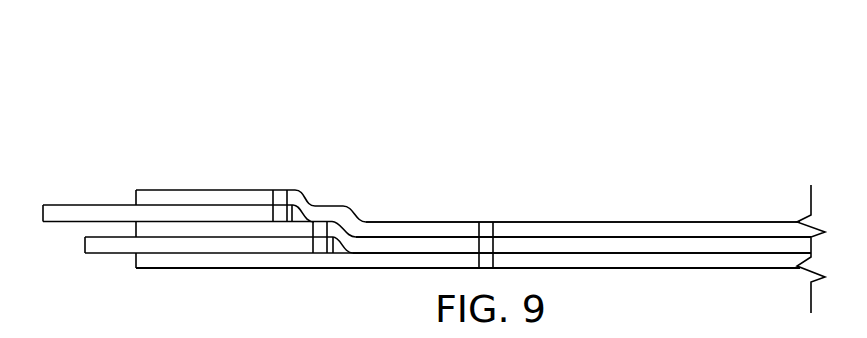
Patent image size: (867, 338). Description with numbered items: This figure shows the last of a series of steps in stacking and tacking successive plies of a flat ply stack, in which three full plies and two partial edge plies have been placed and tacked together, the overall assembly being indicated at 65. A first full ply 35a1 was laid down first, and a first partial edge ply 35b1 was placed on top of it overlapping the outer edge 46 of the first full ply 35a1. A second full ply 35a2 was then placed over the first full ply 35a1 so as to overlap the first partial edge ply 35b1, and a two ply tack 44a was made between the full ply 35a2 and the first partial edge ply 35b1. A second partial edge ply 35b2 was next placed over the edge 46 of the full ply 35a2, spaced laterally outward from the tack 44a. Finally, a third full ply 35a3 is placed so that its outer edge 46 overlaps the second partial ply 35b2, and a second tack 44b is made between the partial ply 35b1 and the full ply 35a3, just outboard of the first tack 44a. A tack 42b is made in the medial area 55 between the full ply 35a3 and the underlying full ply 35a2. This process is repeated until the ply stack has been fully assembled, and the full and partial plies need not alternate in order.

The connector assembly 65 is at (184, 119).
The outer edge 46 is at (248, 158).
The second tack 44b is at (279, 197).
The first tack 44a is at (320, 243).
The second partial edge ply 35b2 is at (75, 213).
The first partial edge ply 35b1 is at (108, 246).
The medial area 55 is at (527, 146).
The tack 42b is at (485, 230).
The third full ply 35a3 is at (634, 228).
The second full ply 35a2 is at (727, 245).
The first full ply 35a1 is at (634, 262).